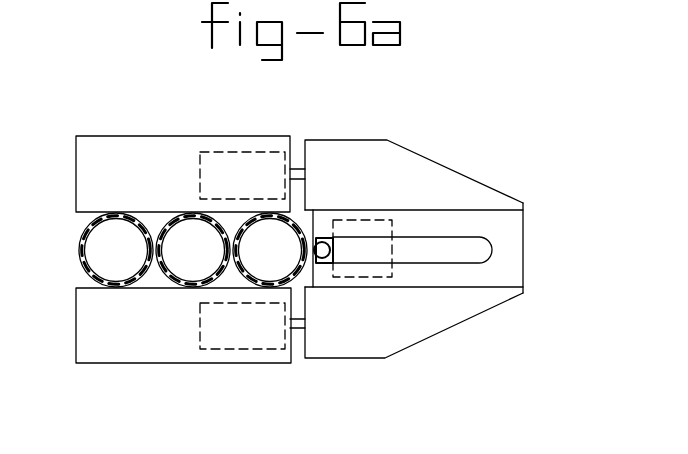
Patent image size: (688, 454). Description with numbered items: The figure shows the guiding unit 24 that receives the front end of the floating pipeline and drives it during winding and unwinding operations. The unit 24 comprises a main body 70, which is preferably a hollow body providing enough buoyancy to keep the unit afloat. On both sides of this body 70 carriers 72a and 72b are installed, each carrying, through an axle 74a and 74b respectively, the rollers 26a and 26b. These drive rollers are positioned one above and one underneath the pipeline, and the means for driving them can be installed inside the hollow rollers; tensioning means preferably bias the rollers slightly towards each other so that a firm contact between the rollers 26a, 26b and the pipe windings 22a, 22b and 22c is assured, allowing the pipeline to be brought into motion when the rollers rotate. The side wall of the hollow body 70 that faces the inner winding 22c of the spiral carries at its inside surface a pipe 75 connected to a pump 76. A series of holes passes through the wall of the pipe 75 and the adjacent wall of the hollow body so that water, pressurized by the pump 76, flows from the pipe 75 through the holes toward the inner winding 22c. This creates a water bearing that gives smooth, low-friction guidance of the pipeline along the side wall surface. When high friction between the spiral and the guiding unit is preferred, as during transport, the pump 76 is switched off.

The guiding unit 24 is at (507, 173).
The roller 26a is at (97, 146).
The roller 26b is at (162, 348).
The pipe winding 22a is at (120, 227).
The pipe winding 22b is at (182, 227).
The inner winding 22c is at (262, 227).
The main body 70 is at (527, 230).
The carrier 72a is at (442, 182).
The carrier 72b is at (473, 308).
The axle 74a is at (308, 172).
The axle 74b is at (313, 330).
The pipe 75 is at (323, 262).
The pump 76 is at (361, 222).